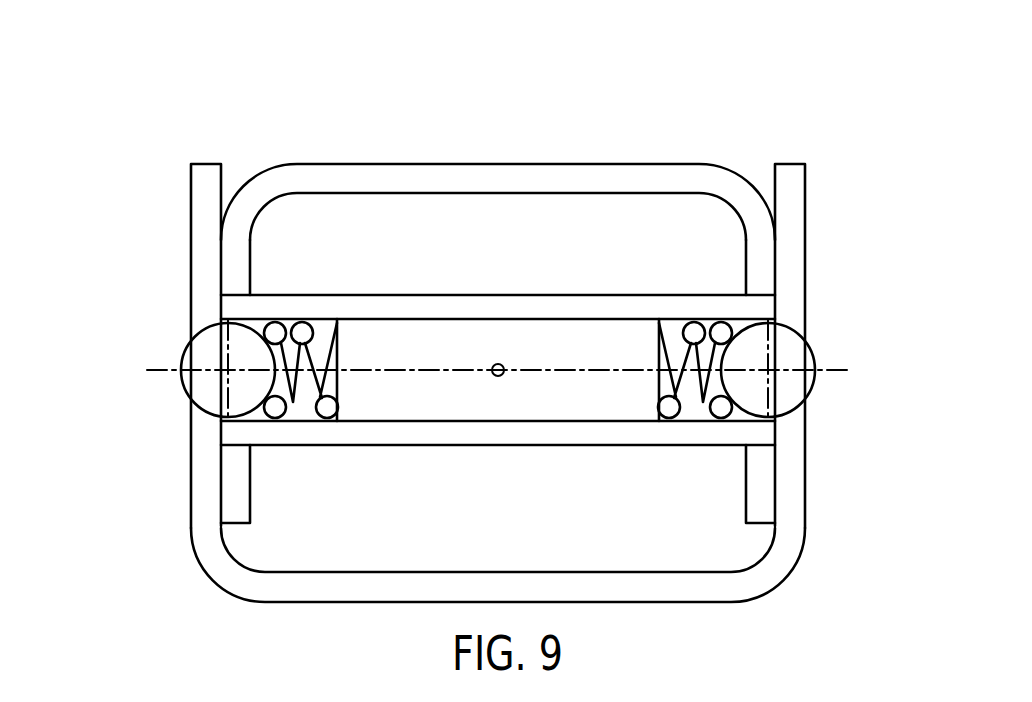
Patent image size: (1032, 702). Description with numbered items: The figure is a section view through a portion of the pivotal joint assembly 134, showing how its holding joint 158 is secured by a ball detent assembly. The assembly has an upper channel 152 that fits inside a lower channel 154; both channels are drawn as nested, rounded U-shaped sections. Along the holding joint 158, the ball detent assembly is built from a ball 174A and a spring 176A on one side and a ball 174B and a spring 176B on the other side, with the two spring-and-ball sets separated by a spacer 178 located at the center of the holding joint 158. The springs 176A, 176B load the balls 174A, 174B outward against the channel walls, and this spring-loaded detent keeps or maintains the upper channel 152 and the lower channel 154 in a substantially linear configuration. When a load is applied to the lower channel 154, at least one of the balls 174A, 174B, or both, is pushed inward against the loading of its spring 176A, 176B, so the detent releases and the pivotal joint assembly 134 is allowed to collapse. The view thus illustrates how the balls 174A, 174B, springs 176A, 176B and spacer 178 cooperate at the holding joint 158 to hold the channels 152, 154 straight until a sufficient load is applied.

The pivotal joint assembly 134 is at (534, 313).
The upper channel 152 is at (403, 163).
The lower channel 154 is at (805, 535).
The holding joint 158 is at (140, 370).
The ball 174A is at (187, 352).
The ball 174B is at (812, 343).
The spring 176A is at (293, 410).
The spring 176B is at (705, 393).
The spacer 178 is at (499, 364).